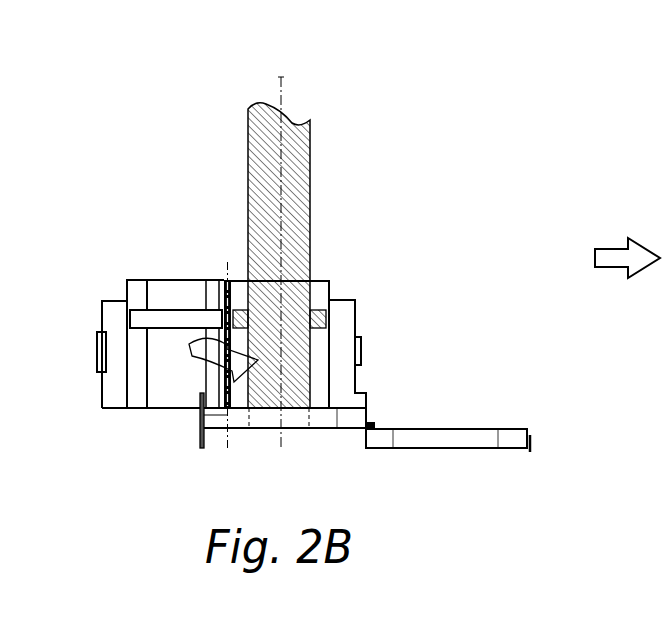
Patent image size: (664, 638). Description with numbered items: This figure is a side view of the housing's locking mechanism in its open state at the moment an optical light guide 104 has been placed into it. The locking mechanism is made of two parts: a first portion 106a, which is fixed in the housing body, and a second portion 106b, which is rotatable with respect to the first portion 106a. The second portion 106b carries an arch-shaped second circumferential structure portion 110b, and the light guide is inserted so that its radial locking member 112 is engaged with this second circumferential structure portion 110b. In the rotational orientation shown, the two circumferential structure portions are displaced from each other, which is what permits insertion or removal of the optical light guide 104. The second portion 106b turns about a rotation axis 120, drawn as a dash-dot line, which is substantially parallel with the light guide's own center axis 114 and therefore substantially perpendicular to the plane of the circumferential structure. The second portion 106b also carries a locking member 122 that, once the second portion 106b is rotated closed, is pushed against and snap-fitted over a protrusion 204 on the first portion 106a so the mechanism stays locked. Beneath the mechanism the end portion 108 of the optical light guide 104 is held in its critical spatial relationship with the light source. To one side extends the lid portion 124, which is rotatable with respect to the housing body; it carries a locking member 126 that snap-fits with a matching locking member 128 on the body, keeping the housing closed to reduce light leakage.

The optical light guide 104 is at (305, 163).
The center axis 114 is at (285, 79).
The rotation axis 120 is at (227, 262).
The first portion 106a is at (322, 265).
The second portion 106b is at (165, 275).
The second circumferential structure portion 110b is at (135, 340).
The radial locking member 112 is at (326, 315).
The locking member 122 is at (96, 352).
The protrusion 204 is at (368, 350).
The end portion 108 is at (302, 392).
The locking member 128 is at (193, 434).
The lid portion 124 is at (548, 432).
The locking member 126 is at (540, 448).